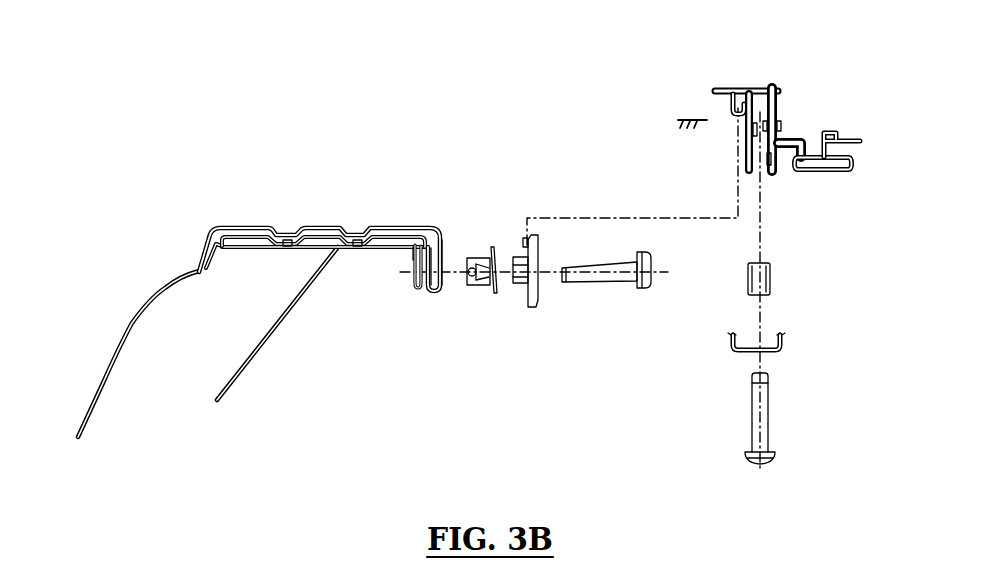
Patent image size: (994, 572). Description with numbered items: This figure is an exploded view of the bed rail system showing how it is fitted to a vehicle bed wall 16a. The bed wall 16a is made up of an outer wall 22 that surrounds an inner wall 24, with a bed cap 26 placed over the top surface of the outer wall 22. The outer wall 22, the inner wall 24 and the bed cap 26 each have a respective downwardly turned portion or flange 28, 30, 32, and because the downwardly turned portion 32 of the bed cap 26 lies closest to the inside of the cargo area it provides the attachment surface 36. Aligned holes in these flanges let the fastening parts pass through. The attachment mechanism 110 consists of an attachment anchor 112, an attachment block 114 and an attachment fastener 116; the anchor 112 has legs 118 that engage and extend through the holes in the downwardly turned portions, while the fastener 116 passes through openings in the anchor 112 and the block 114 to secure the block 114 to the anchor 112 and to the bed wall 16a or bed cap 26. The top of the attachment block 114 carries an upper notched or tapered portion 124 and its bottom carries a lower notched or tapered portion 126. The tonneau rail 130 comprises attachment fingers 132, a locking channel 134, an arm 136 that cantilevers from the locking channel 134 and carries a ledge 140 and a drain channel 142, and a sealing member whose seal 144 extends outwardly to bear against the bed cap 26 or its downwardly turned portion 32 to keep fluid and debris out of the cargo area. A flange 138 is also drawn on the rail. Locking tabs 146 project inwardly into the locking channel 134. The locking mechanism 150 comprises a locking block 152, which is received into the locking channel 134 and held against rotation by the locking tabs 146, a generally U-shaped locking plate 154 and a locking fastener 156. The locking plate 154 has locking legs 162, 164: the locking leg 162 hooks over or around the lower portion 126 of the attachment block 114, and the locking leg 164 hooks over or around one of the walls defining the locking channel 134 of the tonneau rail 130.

The bed wall 16a is at (275, 285).
The outer wall 22 is at (163, 293).
The inner wall 24 is at (312, 280).
The bed cap 26 is at (253, 225).
The downwardly turned portion of the outer wall 28 is at (420, 290).
The downwardly turned portion of the inner wall 30 is at (412, 257).
The downwardly turned portion of the bed cap 32 is at (438, 258).
The attachment surface 36 is at (441, 250).
The attachment mechanism 110 is at (553, 303).
The attachment anchor 112 is at (480, 256).
The attachment block 114 is at (551, 283).
The attachment fastener 116 is at (606, 288).
The legs 118 is at (467, 286).
The upper notched or tapered portion 124 is at (538, 240).
The lower notched or tapered portion 126 is at (529, 302).
The tonneau rail 130 is at (763, 120).
The attachment fingers 132 is at (760, 107).
The locking channel 134 is at (755, 143).
The arm 136 is at (850, 162).
The flange 138 is at (720, 88).
The ledge 140 is at (842, 137).
The drain channel 142 is at (830, 165).
The seal 144 is at (680, 120).
The locking tabs 146 is at (745, 165).
The locking mechanism 150 is at (759, 380).
The locking block 152 is at (757, 282).
The locking plate 154 is at (750, 345).
The locking fastener 156 is at (758, 426).
The locking leg 162 is at (733, 337).
The locking leg 164 is at (779, 337).